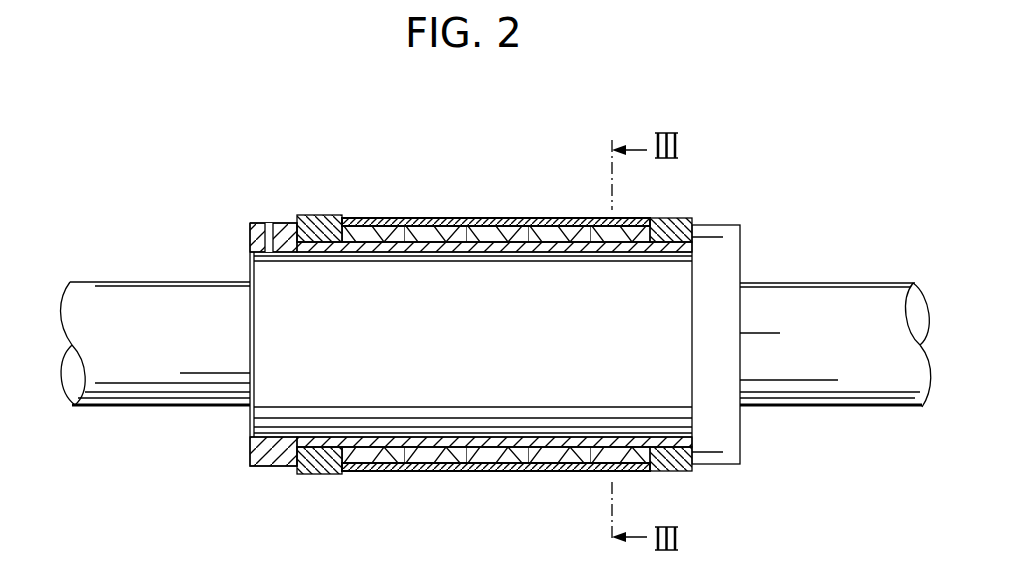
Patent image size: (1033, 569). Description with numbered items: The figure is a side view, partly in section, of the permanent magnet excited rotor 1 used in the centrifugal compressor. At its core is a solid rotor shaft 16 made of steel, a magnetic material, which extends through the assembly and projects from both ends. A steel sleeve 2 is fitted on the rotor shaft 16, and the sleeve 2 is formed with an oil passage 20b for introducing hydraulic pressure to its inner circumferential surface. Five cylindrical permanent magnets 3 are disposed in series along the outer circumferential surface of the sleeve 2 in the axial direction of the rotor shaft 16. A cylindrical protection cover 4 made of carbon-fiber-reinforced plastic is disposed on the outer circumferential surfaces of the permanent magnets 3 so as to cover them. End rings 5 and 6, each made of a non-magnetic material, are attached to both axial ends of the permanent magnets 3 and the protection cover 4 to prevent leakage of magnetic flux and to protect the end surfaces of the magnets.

The rotor 1 is at (857, 268).
The sleeve 2 is at (493, 243).
The permanent magnets 3 is at (433, 232).
The protection cover 4 is at (370, 222).
The end ring 5 is at (684, 218).
The end ring 6 is at (318, 220).
The rotor shaft 16 is at (652, 286).
The oil passage 20b is at (251, 222).